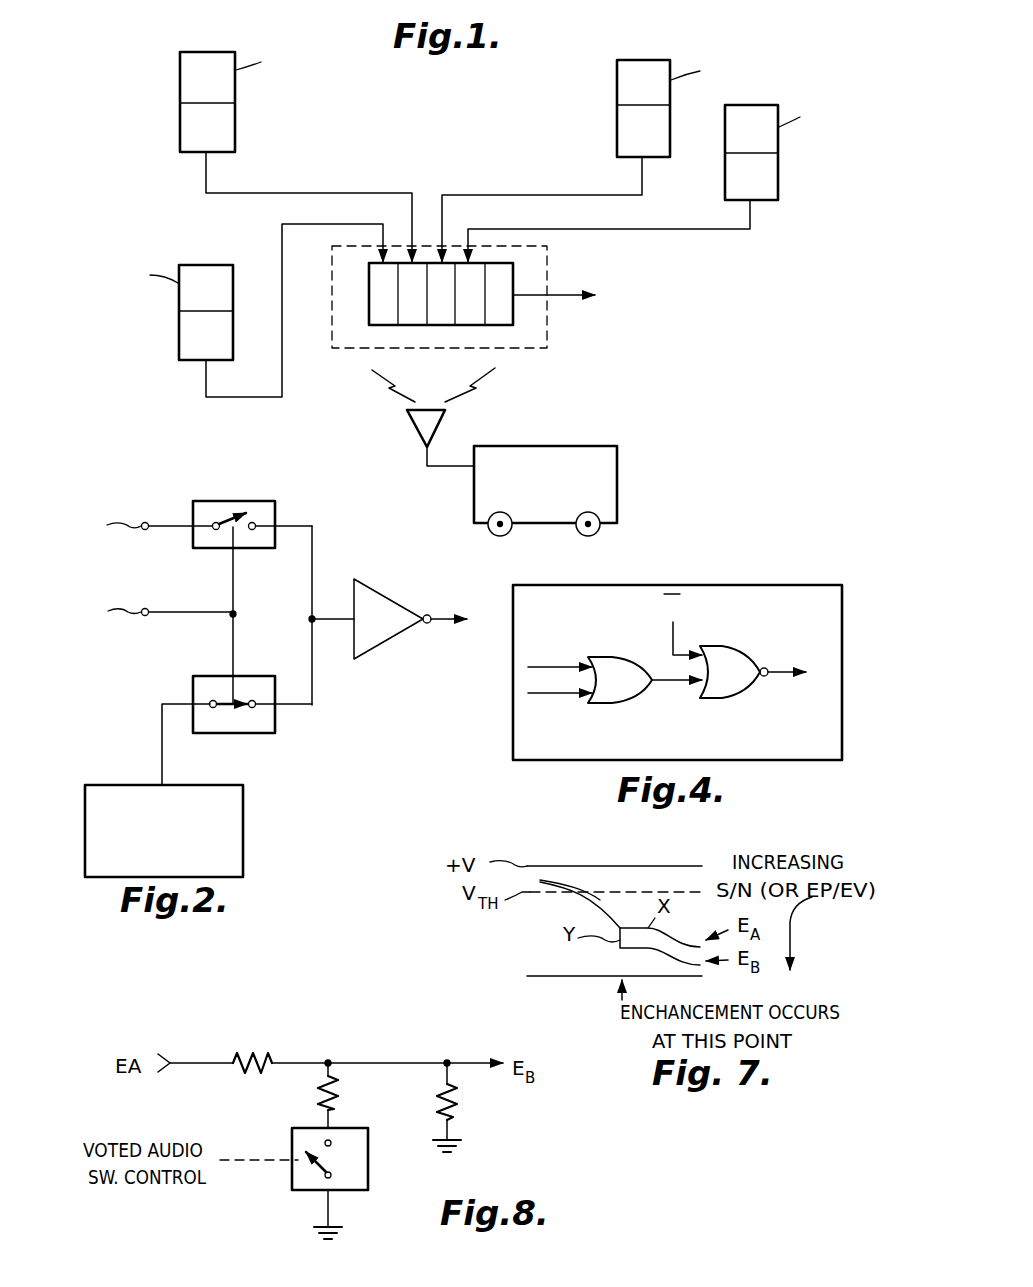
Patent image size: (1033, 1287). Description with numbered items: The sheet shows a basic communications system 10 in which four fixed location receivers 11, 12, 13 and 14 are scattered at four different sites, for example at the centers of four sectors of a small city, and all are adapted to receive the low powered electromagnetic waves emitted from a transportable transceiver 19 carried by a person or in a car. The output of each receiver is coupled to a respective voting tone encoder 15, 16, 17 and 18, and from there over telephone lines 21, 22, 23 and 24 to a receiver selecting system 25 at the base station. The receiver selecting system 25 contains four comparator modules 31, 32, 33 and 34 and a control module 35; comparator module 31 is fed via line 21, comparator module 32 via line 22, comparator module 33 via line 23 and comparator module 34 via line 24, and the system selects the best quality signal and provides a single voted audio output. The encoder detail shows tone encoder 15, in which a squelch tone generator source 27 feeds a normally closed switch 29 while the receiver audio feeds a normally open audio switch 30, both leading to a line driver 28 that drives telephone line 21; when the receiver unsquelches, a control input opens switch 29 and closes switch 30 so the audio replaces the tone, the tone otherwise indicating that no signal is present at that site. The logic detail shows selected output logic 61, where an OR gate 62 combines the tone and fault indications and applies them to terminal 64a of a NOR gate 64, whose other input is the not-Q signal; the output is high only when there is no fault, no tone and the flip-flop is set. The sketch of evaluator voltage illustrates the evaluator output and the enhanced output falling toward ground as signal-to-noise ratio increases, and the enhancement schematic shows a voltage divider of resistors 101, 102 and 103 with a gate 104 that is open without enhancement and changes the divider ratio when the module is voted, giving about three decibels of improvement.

In FIG. 1, the communication system 10 is at (458, 141).
In FIG. 1, the receiver 11 is at (199, 263).
In FIG. 1, the receiver 12 is at (211, 50).
In FIG. 1, the receiver 13 is at (640, 58).
In FIG. 1, the receiver 14 is at (778, 106).
In FIG. 1, the voting tone encoder 15 is at (234, 350).
In FIG. 2, the voting tone encoder 15 is at (334, 762).
In FIG. 1, the voting tone encoder 16 is at (236, 137).
In FIG. 1, the voting tone encoder 17 is at (616, 136).
In FIG. 1, the voting tone encoder 18 is at (779, 200).
In FIG. 1, the transportable transceiver 19 is at (618, 470).
In FIG. 1, the telephone line 21 is at (282, 222).
In FIG. 2, the telephone line 21 is at (441, 627).
In FIG. 1, the telephone line 22 is at (356, 191).
In FIG. 1, the telephone line 23 is at (512, 193).
In FIG. 1, the telephone line 24 is at (678, 227).
In FIG. 1, the receiver selecting system 25 is at (610, 311).
In FIG. 2, the squelch tone generator source 27 is at (244, 823).
In FIG. 2, the line driver 28 is at (385, 651).
In FIG. 2, the switch 29 is at (258, 675).
In FIG. 2, the audio switch 30 is at (239, 500).
In FIG. 1, the comparator module 31 is at (375, 308).
In FIG. 1, the comparator module 32 is at (408, 312).
In FIG. 1, the comparator module 33 is at (437, 312).
In FIG. 1, the comparator module 34 is at (470, 312).
In FIG. 1, the control module 35 is at (500, 308).
In FIG. 4, the selected output logic 61 is at (746, 584).
In FIG. 4, the OR gate 62 is at (614, 657).
In FIG. 4, the NOR gate 64 is at (748, 690).
In FIG. 4, the terminal 64a is at (686, 689).
In FIG. 8, the resistor 101 is at (240, 1050).
In FIG. 8, the resistor 102 is at (460, 1104).
In FIG. 8, the resistor 103 is at (340, 1094).
In FIG. 8, the gate 104 is at (318, 1170).